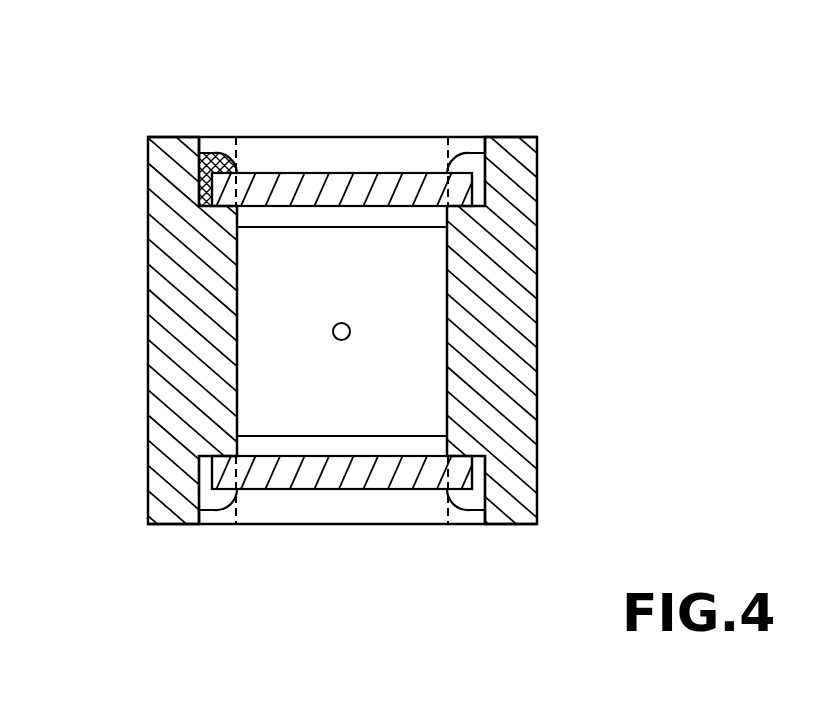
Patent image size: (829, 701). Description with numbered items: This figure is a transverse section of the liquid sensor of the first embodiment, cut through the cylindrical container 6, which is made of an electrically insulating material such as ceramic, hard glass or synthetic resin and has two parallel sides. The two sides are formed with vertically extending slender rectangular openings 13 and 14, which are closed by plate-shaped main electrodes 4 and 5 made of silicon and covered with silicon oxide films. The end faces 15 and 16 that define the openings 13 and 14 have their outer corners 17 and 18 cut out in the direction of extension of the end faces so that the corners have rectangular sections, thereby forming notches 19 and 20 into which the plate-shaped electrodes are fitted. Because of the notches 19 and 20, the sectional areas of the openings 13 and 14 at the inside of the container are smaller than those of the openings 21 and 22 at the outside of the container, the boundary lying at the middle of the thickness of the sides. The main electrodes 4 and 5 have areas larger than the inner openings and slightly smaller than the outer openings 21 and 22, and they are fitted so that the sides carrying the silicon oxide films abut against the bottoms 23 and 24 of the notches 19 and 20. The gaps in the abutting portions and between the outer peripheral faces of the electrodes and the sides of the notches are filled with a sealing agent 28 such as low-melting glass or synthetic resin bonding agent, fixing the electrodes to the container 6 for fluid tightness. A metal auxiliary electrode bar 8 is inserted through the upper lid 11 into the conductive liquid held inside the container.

The plate-shaped main electrode 4 is at (366, 173).
The plate-shaped main electrode 5 is at (363, 487).
The cylindrical container 6 is at (160, 270).
The metal auxiliary electrode bar 8 is at (353, 330).
The upper lid 11 is at (408, 367).
The opening 13 is at (307, 153).
The opening 14 is at (308, 443).
The end face 15 is at (272, 173).
The end face 16 is at (270, 480).
The outer corner 17 is at (213, 138).
The outer corner 18 is at (233, 525).
The notch 19 is at (232, 138).
The notch 20 is at (212, 520).
The opening 21 is at (317, 138).
The opening 22 is at (317, 510).
The bottom of notch 23 is at (220, 213).
The bottom of notch 24 is at (253, 455).
The sealing agent 28 is at (202, 185).